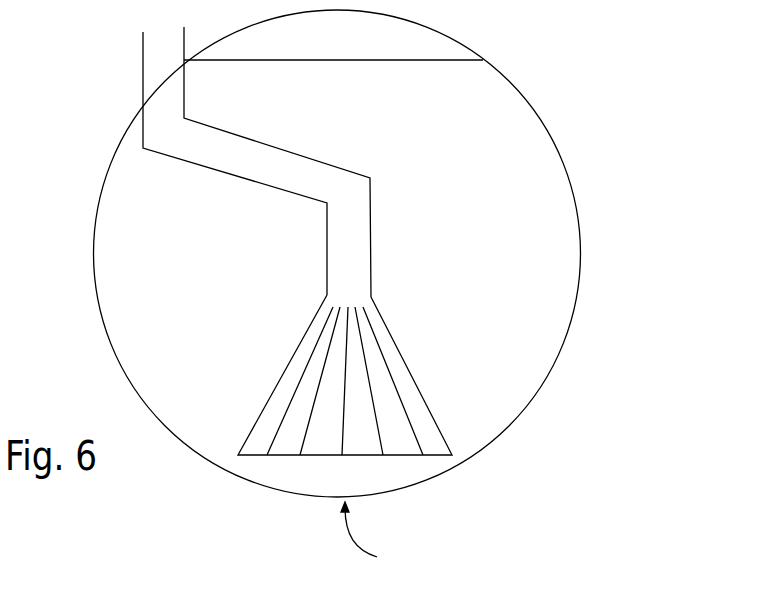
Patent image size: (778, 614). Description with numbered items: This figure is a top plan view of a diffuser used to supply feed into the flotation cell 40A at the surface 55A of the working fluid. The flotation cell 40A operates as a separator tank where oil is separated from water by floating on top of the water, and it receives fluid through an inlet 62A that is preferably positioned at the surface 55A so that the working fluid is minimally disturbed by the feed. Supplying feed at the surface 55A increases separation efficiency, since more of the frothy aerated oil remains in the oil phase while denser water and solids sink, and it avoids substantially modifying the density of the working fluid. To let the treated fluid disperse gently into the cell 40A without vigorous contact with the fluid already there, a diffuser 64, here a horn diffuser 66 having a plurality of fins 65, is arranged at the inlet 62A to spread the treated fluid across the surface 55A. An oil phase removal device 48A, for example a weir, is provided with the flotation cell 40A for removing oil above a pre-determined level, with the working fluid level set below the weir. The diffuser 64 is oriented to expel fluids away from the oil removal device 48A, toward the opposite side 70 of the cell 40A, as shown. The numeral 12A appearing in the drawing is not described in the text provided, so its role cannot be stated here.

The inlet passage 12A is at (297, 147).
The flotation cell 40A is at (574, 195).
The oil phase removal device 48A is at (320, 60).
The surface of the working fluid 55A is at (470, 198).
The inlet 62A is at (410, 368).
The diffuser 64 is at (278, 388).
The horn diffuser 66 is at (330, 381).
The fins 65 is at (293, 403).
The opposite side of cell 70 is at (374, 538).